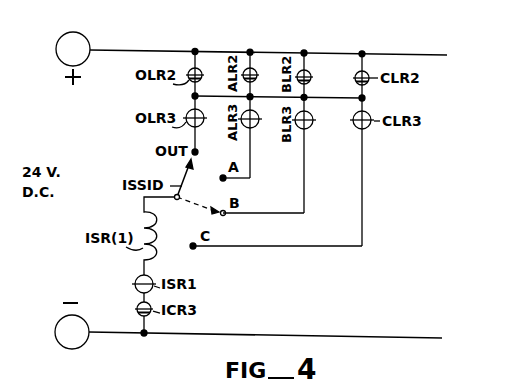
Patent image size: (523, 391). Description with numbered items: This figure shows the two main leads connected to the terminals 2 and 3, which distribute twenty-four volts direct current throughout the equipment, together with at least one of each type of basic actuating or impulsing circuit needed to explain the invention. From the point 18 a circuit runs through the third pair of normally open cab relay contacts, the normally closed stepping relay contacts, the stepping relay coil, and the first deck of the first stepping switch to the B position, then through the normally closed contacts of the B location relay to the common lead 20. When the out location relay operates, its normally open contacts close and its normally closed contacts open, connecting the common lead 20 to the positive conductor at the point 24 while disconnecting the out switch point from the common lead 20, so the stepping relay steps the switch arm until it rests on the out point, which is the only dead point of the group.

The point 24 is at (197, 50).
The common lead 20 is at (277, 98).
The point 18 is at (144, 336).
The terminal 3 is at (73, 58).
The terminal 2 is at (72, 326).